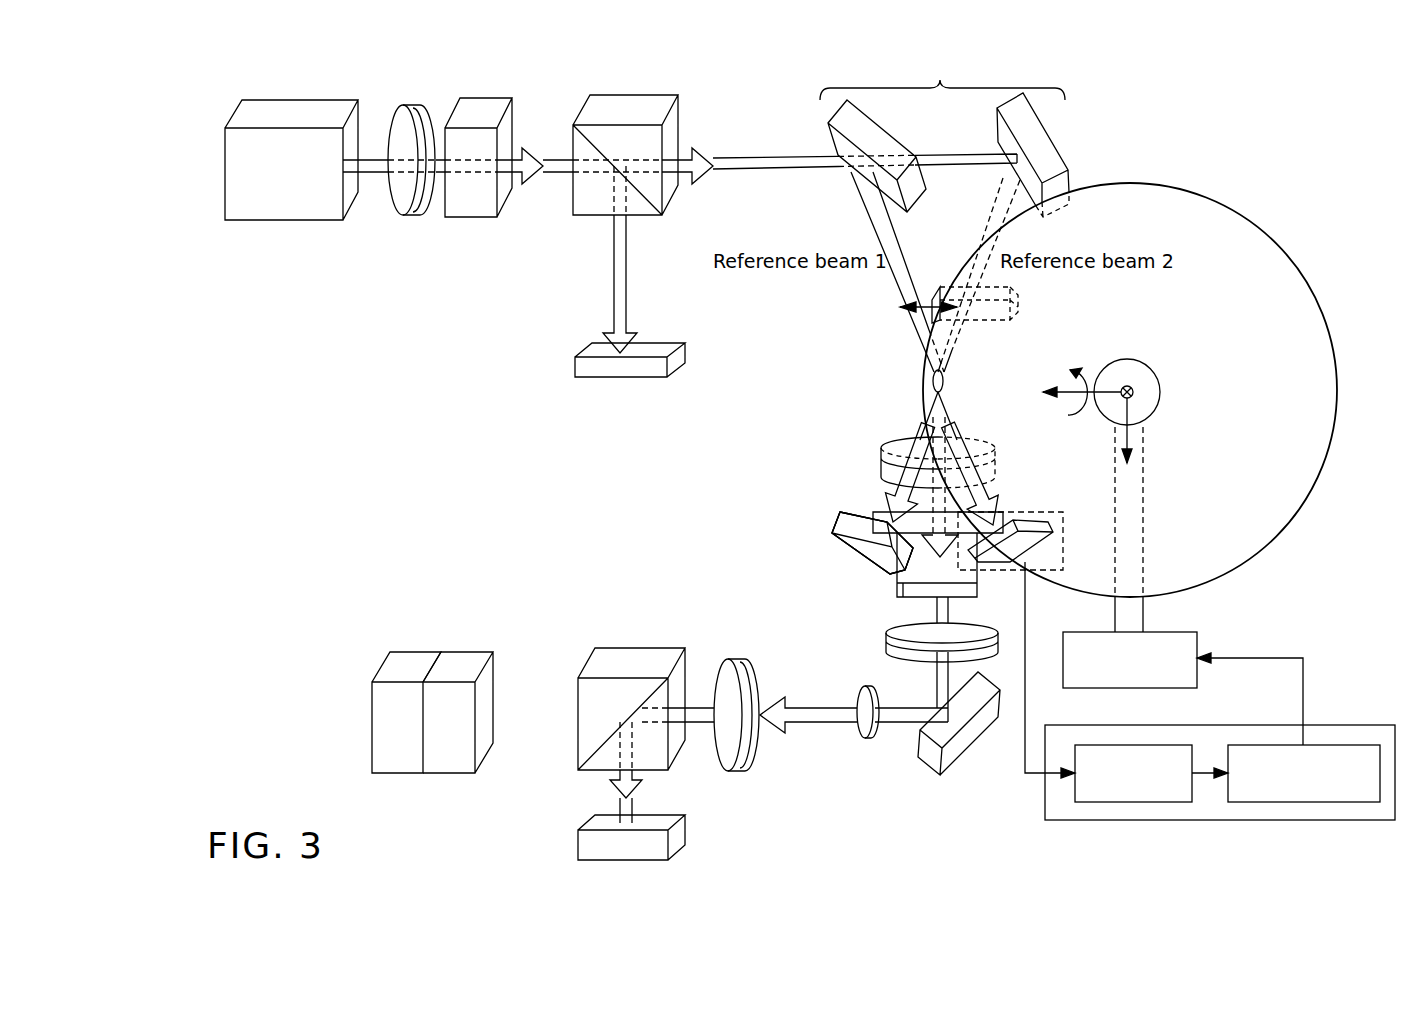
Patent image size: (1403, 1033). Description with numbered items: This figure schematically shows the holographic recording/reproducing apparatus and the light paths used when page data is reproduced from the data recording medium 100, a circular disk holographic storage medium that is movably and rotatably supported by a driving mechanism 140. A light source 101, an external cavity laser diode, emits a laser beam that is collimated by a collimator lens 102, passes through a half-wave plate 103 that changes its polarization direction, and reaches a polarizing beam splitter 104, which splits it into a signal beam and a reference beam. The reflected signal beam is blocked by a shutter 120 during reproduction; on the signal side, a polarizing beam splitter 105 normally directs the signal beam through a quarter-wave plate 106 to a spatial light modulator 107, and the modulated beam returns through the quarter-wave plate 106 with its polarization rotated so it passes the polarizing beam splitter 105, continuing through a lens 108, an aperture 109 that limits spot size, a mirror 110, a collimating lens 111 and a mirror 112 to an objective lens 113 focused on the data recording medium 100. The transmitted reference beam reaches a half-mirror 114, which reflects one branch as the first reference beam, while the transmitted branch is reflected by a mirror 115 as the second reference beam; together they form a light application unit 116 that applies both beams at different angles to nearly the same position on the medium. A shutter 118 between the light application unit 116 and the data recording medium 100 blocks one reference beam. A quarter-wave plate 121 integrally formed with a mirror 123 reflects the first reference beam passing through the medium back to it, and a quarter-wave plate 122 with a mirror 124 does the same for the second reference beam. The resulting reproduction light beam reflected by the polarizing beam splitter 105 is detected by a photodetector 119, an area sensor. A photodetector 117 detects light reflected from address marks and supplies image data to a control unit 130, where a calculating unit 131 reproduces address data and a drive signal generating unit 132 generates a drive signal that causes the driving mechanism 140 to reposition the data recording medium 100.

The data recording medium 100 is at (1250, 556).
The light source 101 is at (300, 100).
The collimator lens 102 is at (405, 105).
The half-wave plate 103 is at (505, 98).
The polarizing beam splitter 104 is at (678, 120).
The polarizing beam splitter 105 is at (607, 650).
The quarter-wave plate 106 is at (478, 682).
The spatial light modulator 107 is at (425, 682).
The lens 108 is at (757, 745).
The aperture 109 is at (876, 700).
The mirror 110 is at (985, 730).
The lens 111 is at (953, 630).
The mirror 112 is at (897, 584).
The objective lens 113 is at (888, 443).
The half-mirror 114 is at (878, 124).
The mirror 115 is at (1044, 122).
The light application unit 116 is at (961, 136).
The photodetector 117 is at (878, 510).
The shutter 118 is at (930, 300).
The photodetector 119 is at (686, 828).
The shutter 120 is at (686, 344).
The quarter-wave plate 121 is at (1030, 512).
The quarter-wave plate 122 is at (834, 532).
The mirror used for reproduction 123 is at (1063, 547).
The mirror used for reproduction 124 is at (842, 546).
The control unit 130 is at (1220, 765).
The calculating unit 131 is at (1138, 802).
The drive signal generating unit 132 is at (1300, 802).
The driving mechanism 140 is at (1197, 635).